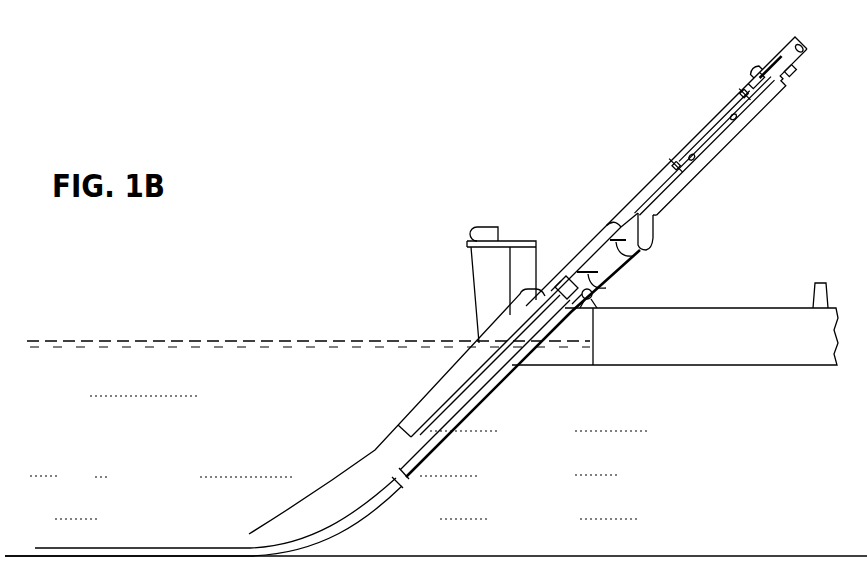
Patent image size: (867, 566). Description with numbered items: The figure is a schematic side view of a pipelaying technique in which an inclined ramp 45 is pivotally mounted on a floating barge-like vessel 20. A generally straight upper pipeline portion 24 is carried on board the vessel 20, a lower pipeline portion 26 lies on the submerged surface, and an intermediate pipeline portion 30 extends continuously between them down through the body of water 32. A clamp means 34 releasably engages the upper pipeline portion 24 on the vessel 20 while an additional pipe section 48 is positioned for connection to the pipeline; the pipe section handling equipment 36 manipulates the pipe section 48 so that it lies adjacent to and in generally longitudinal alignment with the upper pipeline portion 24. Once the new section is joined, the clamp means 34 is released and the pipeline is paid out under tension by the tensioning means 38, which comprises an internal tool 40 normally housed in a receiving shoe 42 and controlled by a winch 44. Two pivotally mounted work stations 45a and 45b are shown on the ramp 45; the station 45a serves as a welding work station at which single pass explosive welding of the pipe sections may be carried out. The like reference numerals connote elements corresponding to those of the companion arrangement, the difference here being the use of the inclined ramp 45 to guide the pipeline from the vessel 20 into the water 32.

The floating vessel 20 is at (734, 306).
The upper pipeline portion 24 is at (600, 240).
The lower pipeline portion 26 is at (249, 534).
The intermediate pipeline portion 30 is at (363, 461).
The body of water 32 is at (138, 465).
The clamp means 34 is at (563, 274).
The pipe section handling equipment 36 is at (738, 90).
The tensioning means 38 is at (762, 57).
The internal tool 40 is at (748, 78).
The receiving shoe 42 is at (769, 62).
The winch 44 is at (814, 42).
The inclined ramp 45 is at (547, 264).
The work station 45a is at (648, 251).
The work station 45b is at (598, 294).
The pipe section 48 is at (654, 184).